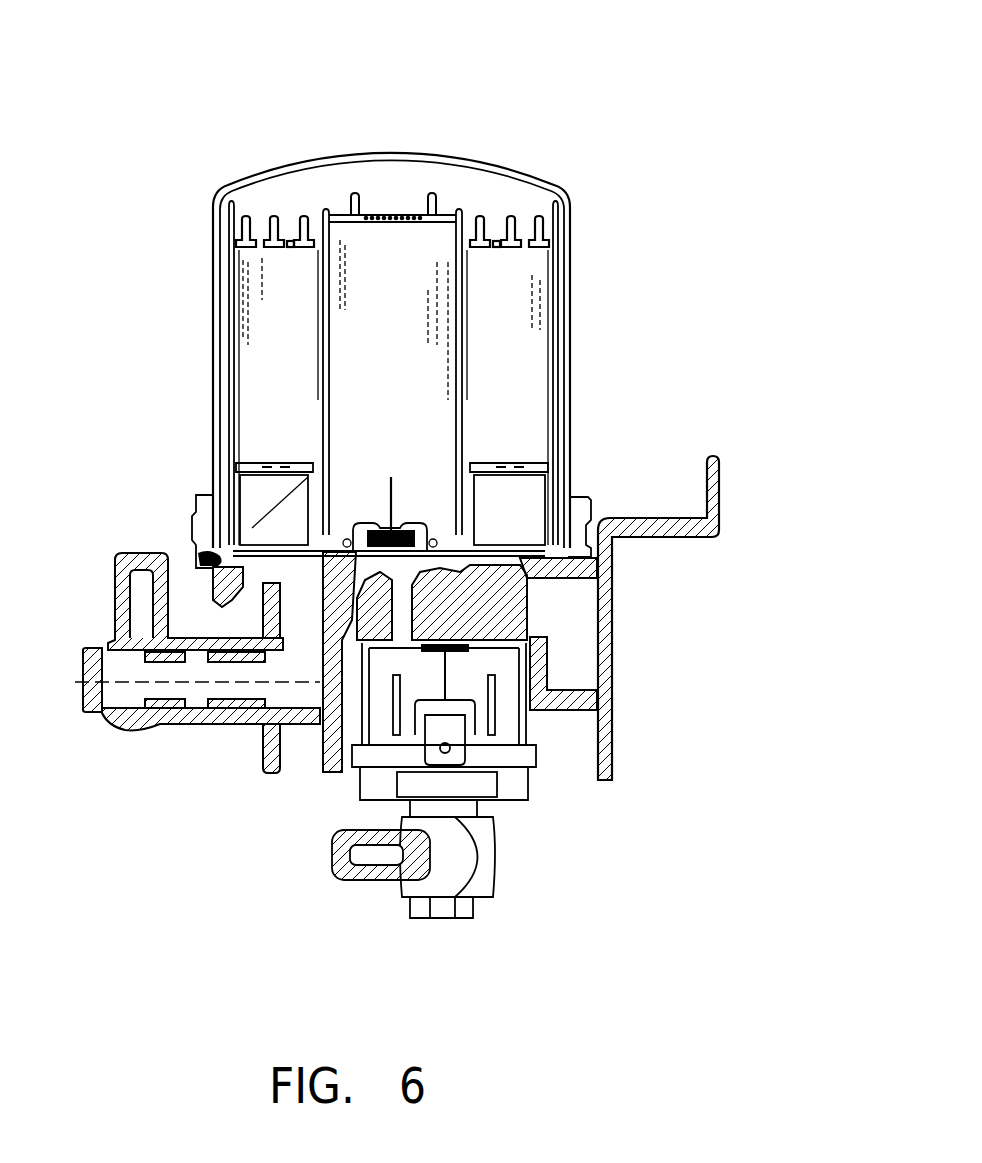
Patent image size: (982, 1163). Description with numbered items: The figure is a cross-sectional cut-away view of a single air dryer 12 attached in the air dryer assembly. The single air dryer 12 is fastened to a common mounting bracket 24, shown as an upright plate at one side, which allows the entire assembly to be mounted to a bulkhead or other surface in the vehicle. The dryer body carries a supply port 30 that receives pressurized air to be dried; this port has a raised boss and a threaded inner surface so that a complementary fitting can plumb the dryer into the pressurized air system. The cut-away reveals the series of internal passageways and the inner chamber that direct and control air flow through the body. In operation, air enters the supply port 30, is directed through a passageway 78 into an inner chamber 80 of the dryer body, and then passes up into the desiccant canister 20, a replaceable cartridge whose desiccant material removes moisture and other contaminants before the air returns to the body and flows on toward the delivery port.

The single air dryer 12 is at (470, 120).
The desiccant canister 20 is at (573, 320).
The mounting bracket 24 is at (715, 487).
The supply port 30 is at (235, 682).
The passageway 78 is at (270, 683).
The inner chamber 80 is at (272, 568).